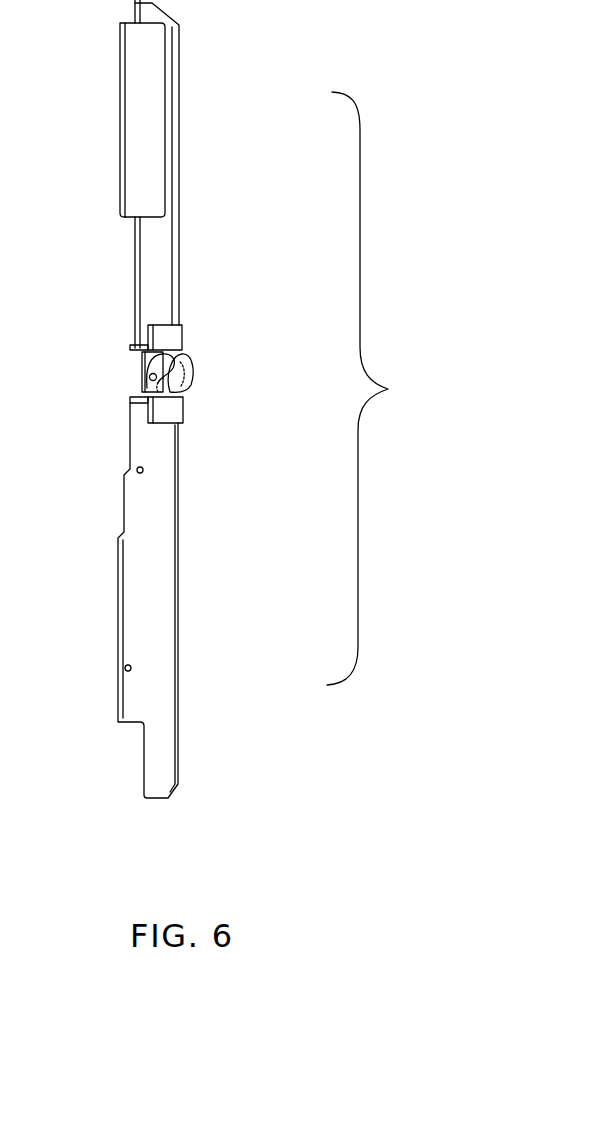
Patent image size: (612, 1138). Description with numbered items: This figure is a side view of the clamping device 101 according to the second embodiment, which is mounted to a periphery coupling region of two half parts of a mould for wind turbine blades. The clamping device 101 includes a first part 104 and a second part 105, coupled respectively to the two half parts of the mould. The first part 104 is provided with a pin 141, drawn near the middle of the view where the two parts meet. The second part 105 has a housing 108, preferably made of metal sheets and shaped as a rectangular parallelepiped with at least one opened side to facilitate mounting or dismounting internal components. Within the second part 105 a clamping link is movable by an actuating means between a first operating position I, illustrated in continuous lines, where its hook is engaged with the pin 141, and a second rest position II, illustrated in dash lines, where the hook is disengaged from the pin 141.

The clamping device 101 is at (397, 388).
The first part 104 is at (188, 168).
The second part 105 is at (210, 610).
The housing 108 is at (152, 520).
The pin 141 is at (150, 373).
The first operating position I is at (172, 360).
The second rest position II is at (185, 373).